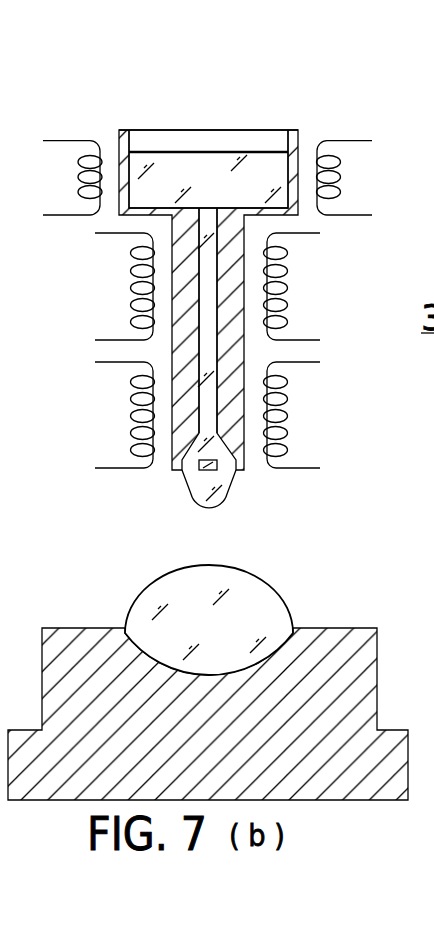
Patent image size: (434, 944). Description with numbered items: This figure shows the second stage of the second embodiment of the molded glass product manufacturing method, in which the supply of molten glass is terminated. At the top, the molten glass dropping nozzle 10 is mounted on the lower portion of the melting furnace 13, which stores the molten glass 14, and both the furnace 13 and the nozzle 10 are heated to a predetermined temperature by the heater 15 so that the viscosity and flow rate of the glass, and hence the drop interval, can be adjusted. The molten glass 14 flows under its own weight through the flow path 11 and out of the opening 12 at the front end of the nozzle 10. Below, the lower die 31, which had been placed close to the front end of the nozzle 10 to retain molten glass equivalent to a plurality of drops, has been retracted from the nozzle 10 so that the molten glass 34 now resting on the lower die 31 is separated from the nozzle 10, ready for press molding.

The molten glass dropping nozzle 10 is at (236, 350).
The flow path 11 is at (208, 343).
The opening 12 is at (193, 467).
The melting furnace 13 is at (293, 136).
The molten glass 14 is at (192, 165).
The heater 15 is at (120, 288).
The lower die 31 is at (343, 672).
The molten glass 34 is at (252, 595).